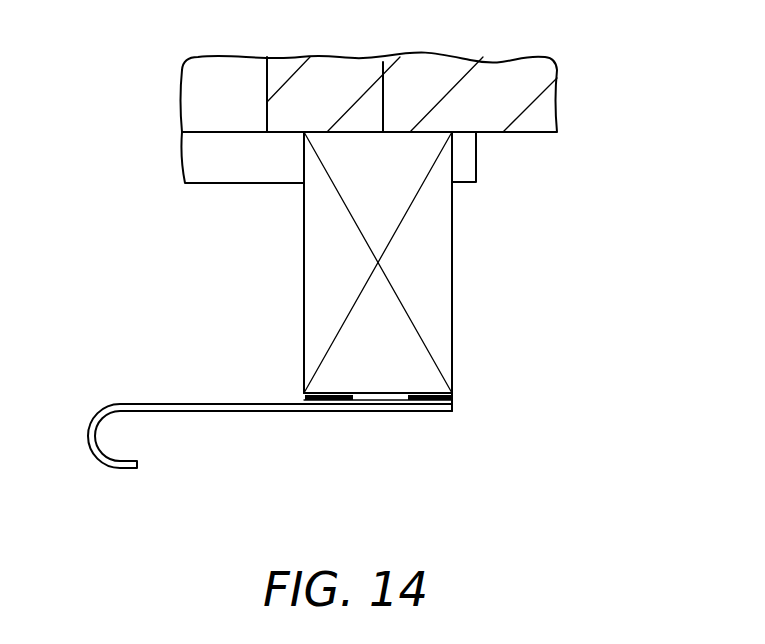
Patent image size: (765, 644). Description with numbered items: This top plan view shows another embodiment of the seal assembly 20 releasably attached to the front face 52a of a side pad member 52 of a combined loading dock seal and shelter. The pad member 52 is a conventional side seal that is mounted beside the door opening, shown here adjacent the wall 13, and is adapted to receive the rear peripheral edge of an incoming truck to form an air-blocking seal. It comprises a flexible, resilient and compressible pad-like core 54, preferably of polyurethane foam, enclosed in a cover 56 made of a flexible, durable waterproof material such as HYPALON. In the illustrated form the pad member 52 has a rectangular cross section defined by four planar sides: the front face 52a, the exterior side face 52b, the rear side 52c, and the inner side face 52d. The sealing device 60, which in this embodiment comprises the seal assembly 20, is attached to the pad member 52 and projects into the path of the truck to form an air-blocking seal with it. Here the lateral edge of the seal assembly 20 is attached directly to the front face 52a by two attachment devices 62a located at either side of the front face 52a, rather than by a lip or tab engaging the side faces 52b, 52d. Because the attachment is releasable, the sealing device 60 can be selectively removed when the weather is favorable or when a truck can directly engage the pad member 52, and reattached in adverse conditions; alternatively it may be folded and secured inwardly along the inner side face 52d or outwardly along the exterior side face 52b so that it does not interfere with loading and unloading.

The wall 13 is at (547, 72).
The seal assembly 20 is at (227, 411).
The side pad member 52 is at (381, 216).
The front face 52a is at (383, 393).
The exterior side face 52b is at (450, 212).
The planar side 52c is at (383, 62).
The inner side face 52d is at (304, 266).
The pad-like core 54 is at (433, 290).
The cover 56 is at (452, 243).
The sealing device 60 is at (258, 479).
The third attachment device 62a is at (342, 404).